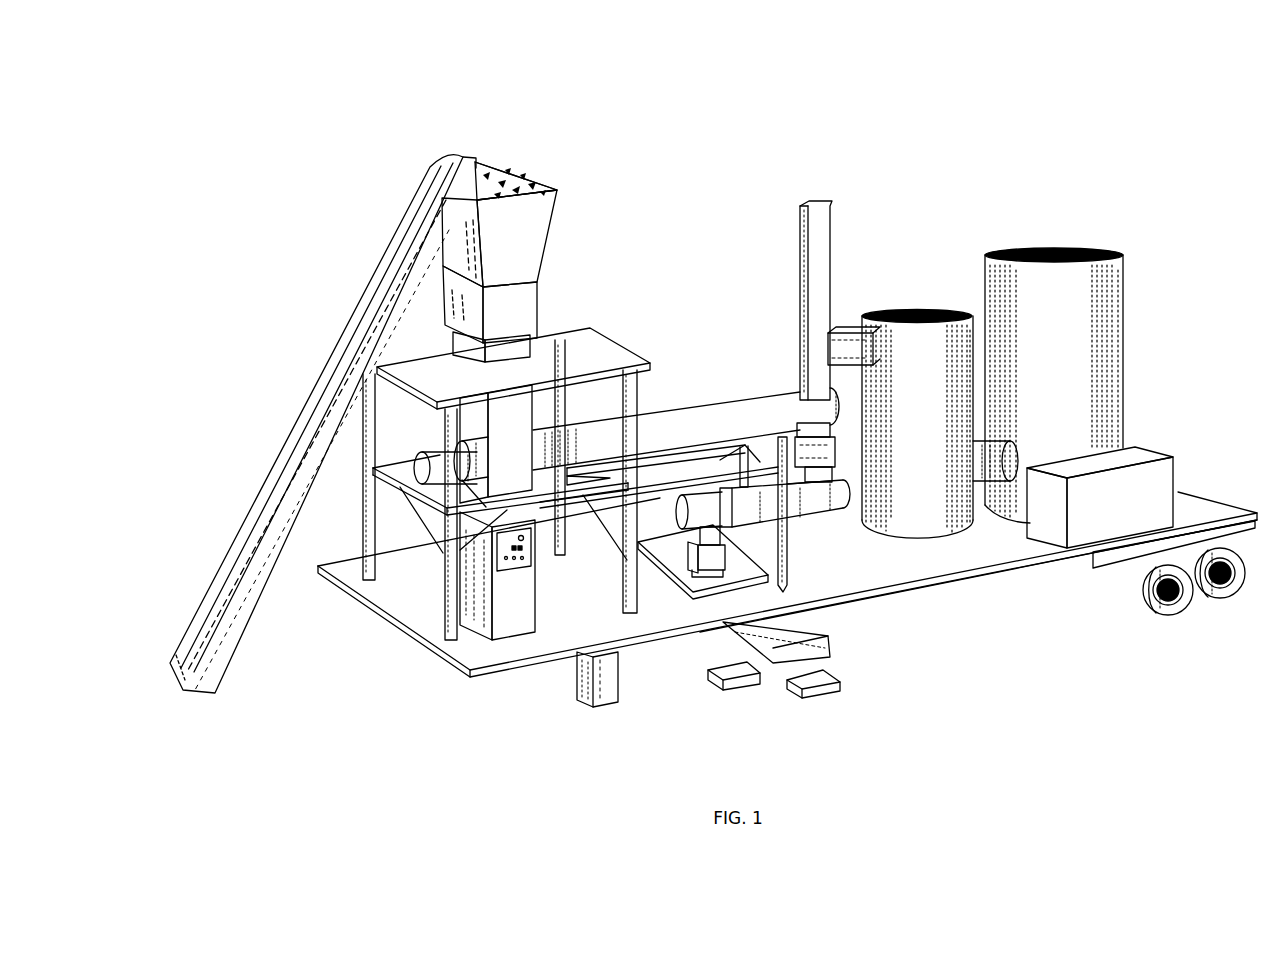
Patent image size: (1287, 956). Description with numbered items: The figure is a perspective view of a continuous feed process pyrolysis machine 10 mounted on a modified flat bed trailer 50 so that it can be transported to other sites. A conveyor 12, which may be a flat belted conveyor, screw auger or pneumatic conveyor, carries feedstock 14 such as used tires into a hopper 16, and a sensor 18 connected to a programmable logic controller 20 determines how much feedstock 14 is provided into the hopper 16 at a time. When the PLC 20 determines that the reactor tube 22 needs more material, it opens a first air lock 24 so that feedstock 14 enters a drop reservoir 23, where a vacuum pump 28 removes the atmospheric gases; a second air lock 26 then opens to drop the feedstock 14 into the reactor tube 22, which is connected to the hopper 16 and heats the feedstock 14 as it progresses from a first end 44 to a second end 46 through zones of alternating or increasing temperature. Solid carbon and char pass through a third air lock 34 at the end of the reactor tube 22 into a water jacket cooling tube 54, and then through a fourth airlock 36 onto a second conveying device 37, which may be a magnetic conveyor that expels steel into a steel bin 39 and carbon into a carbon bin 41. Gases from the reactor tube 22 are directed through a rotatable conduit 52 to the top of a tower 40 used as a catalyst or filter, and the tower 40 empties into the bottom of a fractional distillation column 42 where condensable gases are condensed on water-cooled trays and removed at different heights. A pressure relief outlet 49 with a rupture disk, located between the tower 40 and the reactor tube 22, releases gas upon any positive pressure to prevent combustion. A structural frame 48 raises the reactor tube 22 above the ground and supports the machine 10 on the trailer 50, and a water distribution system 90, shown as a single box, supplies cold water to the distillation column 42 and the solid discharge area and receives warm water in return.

The pyrolysis machine 10 is at (786, 118).
The conveyor 12 is at (447, 187).
The feedstock 14 is at (487, 175).
The hopper 16 is at (527, 220).
The sensor 18 is at (520, 187).
The programmable logic controller 20 is at (517, 560).
The reactor tube 22 is at (740, 415).
The drop reservoir 23 is at (478, 434).
The first air lock 24 is at (530, 302).
The second air lock 26 is at (483, 410).
The vacuum pump 28 is at (438, 468).
The third air lock 34 is at (820, 457).
The fourth airlock 36 is at (770, 500).
The second conveying device 37 is at (813, 640).
The steel bin 39 is at (733, 685).
The tower 40 is at (910, 345).
The carbon bin 41 is at (840, 690).
The fractional distillation column 42 is at (1058, 282).
The first end 44 is at (462, 663).
The second end 46 is at (1200, 510).
The structural frame 48 is at (585, 490).
The pressure relief outlet 49 is at (805, 233).
The flat bed trailer 50 is at (972, 545).
The conduit 52 is at (849, 348).
The water jacket cooling tube 54 is at (787, 515).
The water distribution system 90 is at (1148, 452).